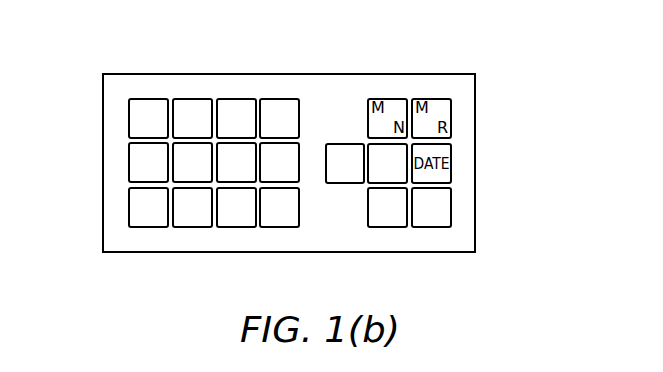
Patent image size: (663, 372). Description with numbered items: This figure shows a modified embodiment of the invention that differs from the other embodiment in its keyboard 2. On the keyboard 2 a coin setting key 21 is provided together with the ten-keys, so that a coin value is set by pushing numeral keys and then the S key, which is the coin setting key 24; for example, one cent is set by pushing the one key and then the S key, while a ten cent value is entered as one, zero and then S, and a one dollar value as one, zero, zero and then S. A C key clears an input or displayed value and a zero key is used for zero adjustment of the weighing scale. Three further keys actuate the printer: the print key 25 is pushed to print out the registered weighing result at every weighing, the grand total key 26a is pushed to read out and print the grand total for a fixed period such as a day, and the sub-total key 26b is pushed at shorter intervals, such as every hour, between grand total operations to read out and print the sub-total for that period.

The keyboard 2 is at (457, 77).
The coin setting key 21 is at (257, 97).
The coin setting key (S key) 24 is at (343, 143).
The print key 25 is at (431, 227).
The grand total key 26a is at (372, 180).
The sub-total key 26b is at (385, 227).